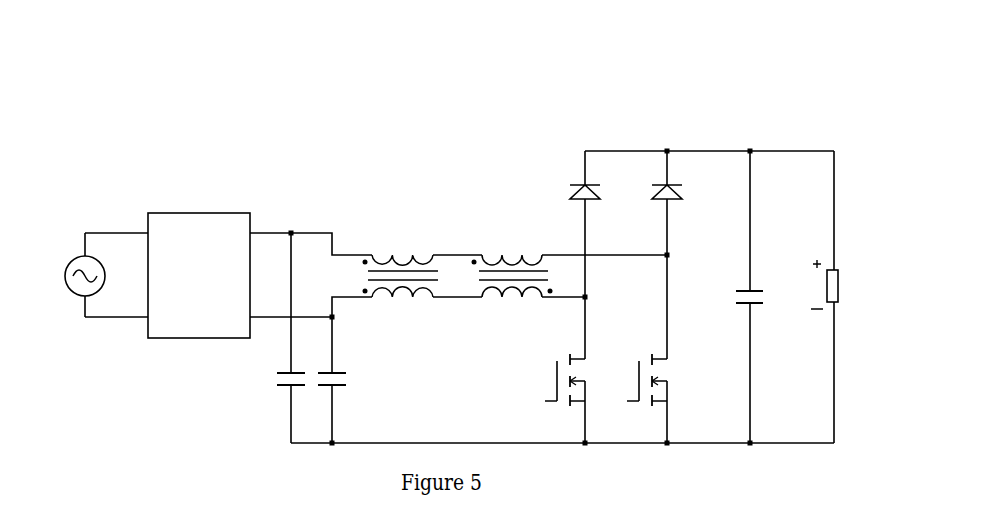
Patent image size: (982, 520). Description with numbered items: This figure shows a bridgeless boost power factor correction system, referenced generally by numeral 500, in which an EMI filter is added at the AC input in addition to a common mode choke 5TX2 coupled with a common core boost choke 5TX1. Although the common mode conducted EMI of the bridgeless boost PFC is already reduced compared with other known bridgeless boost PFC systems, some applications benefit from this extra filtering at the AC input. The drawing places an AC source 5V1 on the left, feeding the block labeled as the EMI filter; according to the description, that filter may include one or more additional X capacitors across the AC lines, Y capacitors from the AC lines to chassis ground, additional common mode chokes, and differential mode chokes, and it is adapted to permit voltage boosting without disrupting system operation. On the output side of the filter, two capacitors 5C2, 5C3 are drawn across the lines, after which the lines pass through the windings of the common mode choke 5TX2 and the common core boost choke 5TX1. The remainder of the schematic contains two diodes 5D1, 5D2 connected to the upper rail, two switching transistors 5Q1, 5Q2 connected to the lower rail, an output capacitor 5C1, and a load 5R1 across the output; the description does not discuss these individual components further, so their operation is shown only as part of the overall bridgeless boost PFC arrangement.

The bridgeless boost PFC system 500 is at (472, 109).
The AC source 5V1 is at (63, 291).
The capacitor 5C2 is at (270, 373).
The capacitor 5C3 is at (355, 373).
The common mode choke 5TX2 is at (401, 260).
The common core boost choke 5TX1 is at (512, 260).
The diode 5D1 is at (604, 186).
The diode 5D2 is at (687, 186).
The transistor (MOSFET) 5Q1 is at (562, 391).
The transistor (MOSFET) 5Q2 is at (645, 391).
The capacitor 5C1 is at (769, 292).
The load resistor 5R1 is at (855, 283).